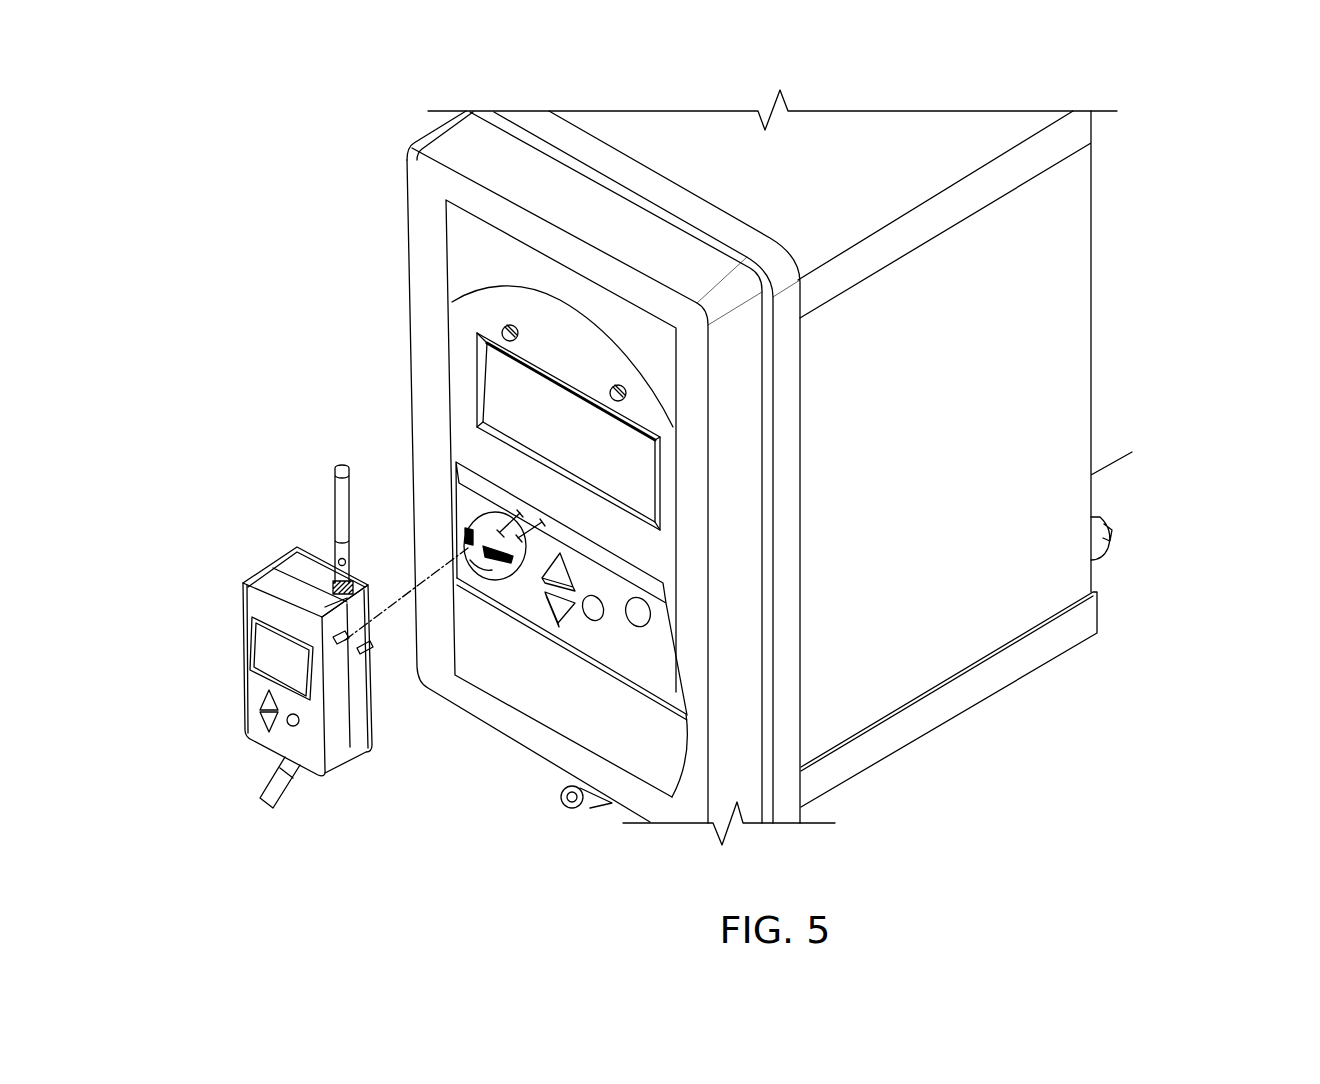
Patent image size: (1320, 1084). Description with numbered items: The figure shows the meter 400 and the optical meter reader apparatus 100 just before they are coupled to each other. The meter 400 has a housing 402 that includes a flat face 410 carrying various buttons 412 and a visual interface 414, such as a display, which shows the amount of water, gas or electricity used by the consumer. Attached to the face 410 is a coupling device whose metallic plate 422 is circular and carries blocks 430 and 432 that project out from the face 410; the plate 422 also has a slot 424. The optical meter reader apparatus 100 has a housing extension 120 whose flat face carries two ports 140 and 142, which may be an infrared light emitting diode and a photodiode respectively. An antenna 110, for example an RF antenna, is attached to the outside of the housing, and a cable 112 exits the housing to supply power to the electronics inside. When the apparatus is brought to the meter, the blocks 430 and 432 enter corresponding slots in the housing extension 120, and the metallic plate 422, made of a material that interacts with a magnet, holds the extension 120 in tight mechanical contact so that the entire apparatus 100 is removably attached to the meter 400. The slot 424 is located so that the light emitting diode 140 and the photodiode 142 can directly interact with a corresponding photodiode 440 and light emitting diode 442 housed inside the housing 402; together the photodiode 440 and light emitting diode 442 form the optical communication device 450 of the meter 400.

The optical meter reader apparatus 100 is at (288, 658).
The antenna 110 is at (463, 528).
The cable 112 is at (262, 800).
The housing extension 120 is at (377, 647).
The port 140 is at (332, 637).
The port 142 is at (362, 654).
The meter 400 is at (1043, 592).
The housing 402 is at (1060, 268).
The flat face 410 is at (450, 228).
The buttons 412 is at (563, 617).
The visual interface 414 is at (558, 423).
The metallic plate 422 is at (493, 565).
The slot 424 is at (490, 553).
The block 430 is at (335, 508).
The block 432 is at (505, 566).
The photodiode 440 is at (517, 507).
The light emitting diode 442 is at (530, 528).
The optical communication device 450 is at (798, 452).